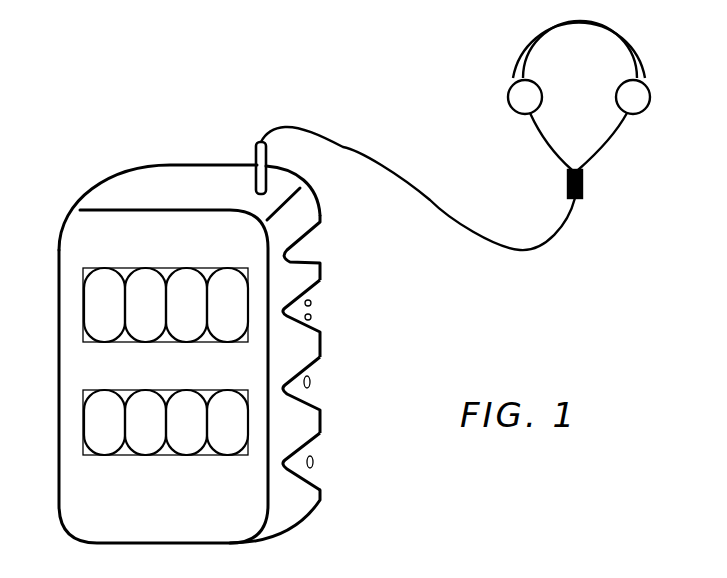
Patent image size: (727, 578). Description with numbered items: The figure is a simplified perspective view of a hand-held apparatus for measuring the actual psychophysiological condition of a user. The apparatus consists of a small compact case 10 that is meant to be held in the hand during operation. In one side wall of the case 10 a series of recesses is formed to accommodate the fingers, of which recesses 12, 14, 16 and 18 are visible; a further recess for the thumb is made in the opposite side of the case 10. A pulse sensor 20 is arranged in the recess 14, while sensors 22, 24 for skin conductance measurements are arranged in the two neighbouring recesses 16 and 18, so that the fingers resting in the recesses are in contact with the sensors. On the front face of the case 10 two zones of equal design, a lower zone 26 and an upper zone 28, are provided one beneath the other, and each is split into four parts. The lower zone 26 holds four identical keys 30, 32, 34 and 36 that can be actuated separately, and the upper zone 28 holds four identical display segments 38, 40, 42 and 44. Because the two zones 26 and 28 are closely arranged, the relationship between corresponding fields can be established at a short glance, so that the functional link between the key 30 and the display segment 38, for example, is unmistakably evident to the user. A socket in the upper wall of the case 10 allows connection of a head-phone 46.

The case 10 is at (72, 368).
The recess 12 is at (322, 244).
The recess 14 is at (322, 284).
The recess 16 is at (322, 358).
The recess 18 is at (322, 440).
The pulse sensor 20 is at (311, 317).
The sensor for skin conductance measurement 22 is at (311, 382).
The sensor for skin conductance measurement 24 is at (314, 462).
The lower zone 26 is at (131, 444).
The upper zone 28 is at (134, 290).
The key 30 is at (107, 446).
The key 32 is at (149, 446).
The key 34 is at (190, 446).
The key 36 is at (231, 446).
The display segment 38 is at (102, 278).
The display segment 40 is at (144, 278).
The display segment 42 is at (184, 278).
The display segment 44 is at (225, 278).
The head-phone 46 is at (643, 30).